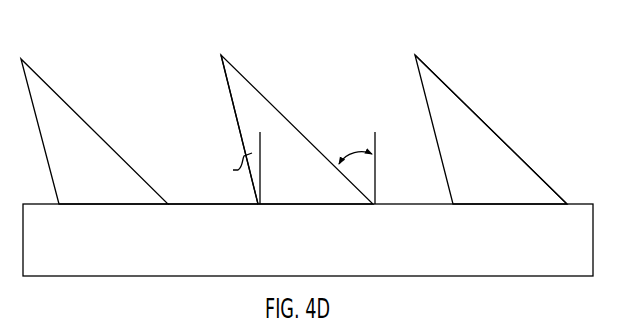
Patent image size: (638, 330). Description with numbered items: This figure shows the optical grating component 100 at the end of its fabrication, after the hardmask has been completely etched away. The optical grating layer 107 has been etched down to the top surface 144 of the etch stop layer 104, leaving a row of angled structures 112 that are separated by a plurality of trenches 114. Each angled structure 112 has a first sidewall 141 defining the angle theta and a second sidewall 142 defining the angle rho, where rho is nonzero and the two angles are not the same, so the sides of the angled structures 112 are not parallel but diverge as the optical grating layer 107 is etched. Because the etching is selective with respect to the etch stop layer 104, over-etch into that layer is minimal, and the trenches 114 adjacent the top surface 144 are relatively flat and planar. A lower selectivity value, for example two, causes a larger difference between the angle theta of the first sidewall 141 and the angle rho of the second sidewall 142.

The optical grating component 100 is at (493, 53).
The etch stop layer 104 is at (588, 250).
The optical grating layer 107 is at (535, 175).
The angled structures 112 is at (417, 97).
The trenches 114 is at (150, 121).
The first sidewall 141 is at (278, 108).
The second sidewall 142 is at (232, 105).
The top surface 144 is at (192, 203).